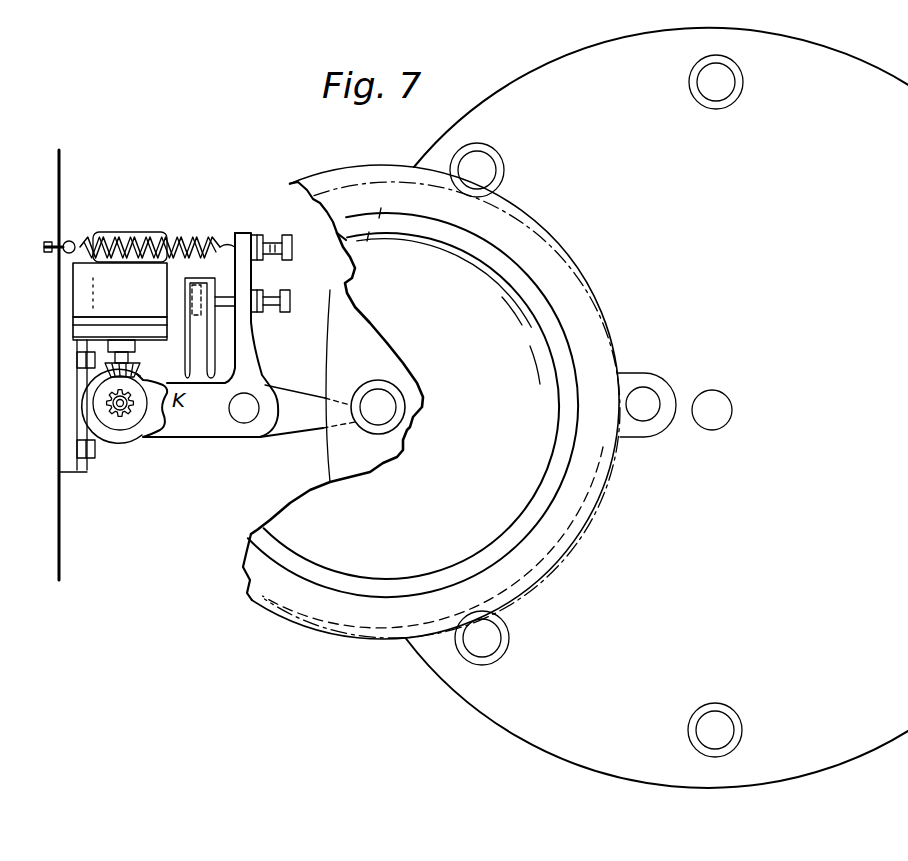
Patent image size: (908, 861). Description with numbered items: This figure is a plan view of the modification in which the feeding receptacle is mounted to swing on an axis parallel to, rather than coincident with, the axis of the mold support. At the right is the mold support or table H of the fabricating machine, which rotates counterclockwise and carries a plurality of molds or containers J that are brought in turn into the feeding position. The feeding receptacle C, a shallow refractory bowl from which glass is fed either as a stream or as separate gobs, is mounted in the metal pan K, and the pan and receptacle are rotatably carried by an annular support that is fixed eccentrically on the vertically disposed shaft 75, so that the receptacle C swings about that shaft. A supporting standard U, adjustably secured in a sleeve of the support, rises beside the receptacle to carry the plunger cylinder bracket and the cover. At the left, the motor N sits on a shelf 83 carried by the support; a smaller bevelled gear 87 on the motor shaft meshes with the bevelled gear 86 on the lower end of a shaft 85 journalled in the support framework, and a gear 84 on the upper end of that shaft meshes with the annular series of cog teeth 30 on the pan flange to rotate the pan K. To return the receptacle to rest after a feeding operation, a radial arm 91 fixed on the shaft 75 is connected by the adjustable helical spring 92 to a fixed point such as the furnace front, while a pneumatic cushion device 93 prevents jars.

The cog teeth 30 is at (140, 440).
The shaft 75 is at (248, 422).
The shelf 83 is at (132, 358).
The gear 84 is at (97, 404).
The shaft 85 is at (120, 413).
The bevelled gear 86 is at (85, 418).
The smaller bevelled gear 87 is at (95, 375).
The radial arm 91 is at (253, 353).
The adjustable helical spring 92 is at (139, 234).
The pneumatic cushion device 93 is at (185, 287).
The feeding receptacle C is at (405, 406).
The mold support or table H is at (657, 408).
The molds or containers J is at (743, 87).
The pan K is at (431, 402).
The motor N is at (120, 286).
The supporting standard U is at (641, 394).